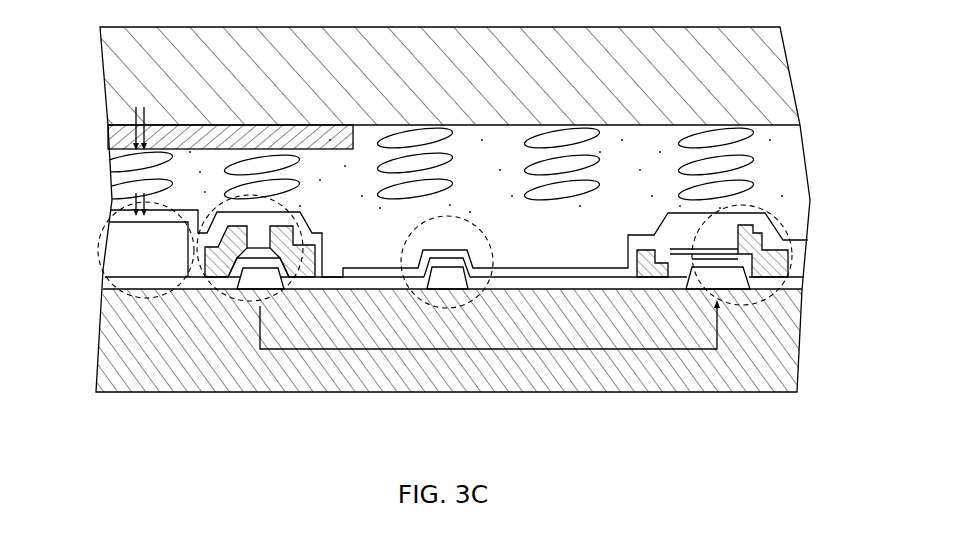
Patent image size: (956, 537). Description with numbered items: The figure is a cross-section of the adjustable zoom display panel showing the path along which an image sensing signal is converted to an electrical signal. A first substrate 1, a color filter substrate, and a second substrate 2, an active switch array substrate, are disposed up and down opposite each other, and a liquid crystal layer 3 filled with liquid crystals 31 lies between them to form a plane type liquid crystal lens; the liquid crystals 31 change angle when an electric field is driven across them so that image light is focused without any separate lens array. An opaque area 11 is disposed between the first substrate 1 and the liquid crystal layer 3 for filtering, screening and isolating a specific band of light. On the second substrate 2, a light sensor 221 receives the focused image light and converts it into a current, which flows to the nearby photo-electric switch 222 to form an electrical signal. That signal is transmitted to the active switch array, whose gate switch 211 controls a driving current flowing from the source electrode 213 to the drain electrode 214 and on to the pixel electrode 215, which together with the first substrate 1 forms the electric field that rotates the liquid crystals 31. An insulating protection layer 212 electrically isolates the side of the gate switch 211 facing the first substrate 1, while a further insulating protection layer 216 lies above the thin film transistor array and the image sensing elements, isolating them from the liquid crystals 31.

The first substrate 1 is at (795, 84).
The opaque area 11 is at (110, 136).
The second substrate 2 is at (794, 349).
The gate switch 211 is at (745, 279).
The insulating protection layer 212 is at (780, 277).
The source electrode 213 is at (795, 257).
The drain electrode 214 is at (686, 249).
The pixel electrode 215 is at (490, 255).
The insulating protection layer 216 is at (130, 212).
The light sensor 221 is at (185, 268).
The photo-electric switch 222 is at (184, 249).
The liquid crystal layer 3 is at (797, 188).
The liquid crystals 31 is at (112, 172).